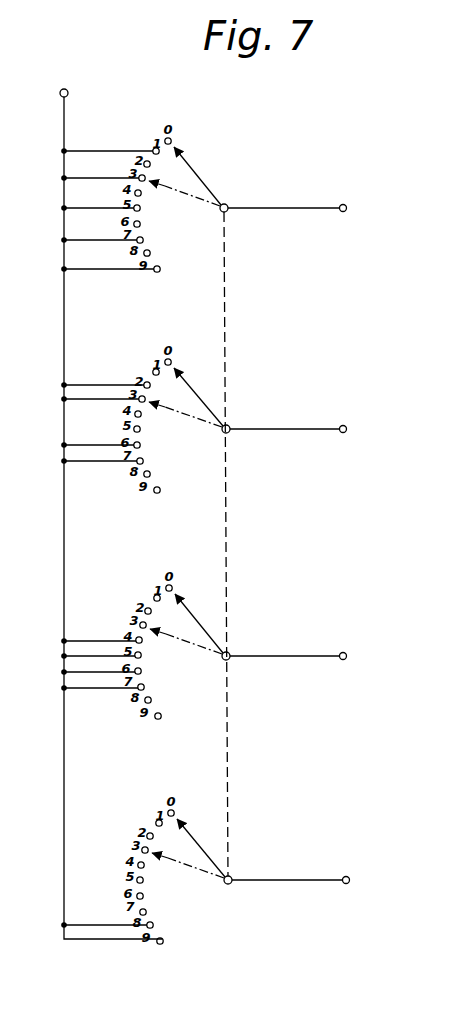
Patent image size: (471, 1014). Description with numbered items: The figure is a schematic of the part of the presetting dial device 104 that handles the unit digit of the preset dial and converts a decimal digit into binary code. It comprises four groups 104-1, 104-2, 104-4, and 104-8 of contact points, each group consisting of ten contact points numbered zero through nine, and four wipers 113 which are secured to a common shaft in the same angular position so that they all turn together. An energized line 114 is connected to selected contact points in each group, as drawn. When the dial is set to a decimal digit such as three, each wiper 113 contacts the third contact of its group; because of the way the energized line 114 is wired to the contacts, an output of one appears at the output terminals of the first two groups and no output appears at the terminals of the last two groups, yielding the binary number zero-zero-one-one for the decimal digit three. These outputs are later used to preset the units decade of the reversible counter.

The energized line 114 is at (67, 128).
The presetting dial device 104 is at (252, 139).
The group of contact points 104-1 is at (209, 241).
The group of contact points 104-2 is at (209, 454).
The group of contact points 104-4 is at (209, 688).
The group of contact points 104-8 is at (206, 904).
The wiper 113 is at (208, 190).